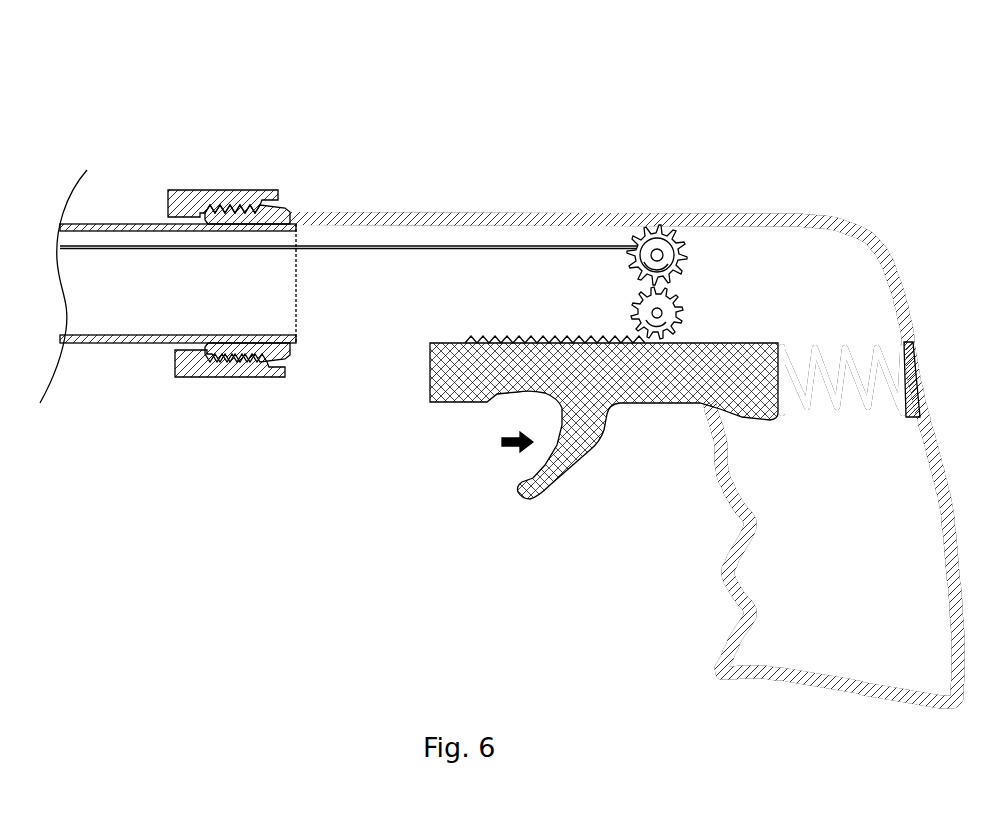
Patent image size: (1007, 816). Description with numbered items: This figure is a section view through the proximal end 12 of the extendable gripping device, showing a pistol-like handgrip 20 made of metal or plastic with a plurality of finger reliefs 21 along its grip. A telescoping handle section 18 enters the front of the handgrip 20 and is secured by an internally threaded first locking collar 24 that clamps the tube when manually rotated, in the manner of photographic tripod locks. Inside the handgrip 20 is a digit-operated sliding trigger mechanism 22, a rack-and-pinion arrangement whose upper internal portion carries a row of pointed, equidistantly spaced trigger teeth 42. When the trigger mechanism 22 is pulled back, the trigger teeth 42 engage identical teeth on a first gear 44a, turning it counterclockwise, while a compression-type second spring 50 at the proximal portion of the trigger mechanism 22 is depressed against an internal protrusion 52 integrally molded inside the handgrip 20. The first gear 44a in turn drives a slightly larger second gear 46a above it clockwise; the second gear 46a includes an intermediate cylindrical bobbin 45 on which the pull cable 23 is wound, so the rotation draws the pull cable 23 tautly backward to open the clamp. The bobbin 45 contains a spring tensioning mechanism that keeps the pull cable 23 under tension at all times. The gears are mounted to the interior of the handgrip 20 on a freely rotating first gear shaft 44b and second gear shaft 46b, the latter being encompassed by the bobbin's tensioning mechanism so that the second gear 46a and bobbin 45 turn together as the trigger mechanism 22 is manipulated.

The proximal end 12 is at (698, 109).
The telescoping handle section 18 is at (153, 223).
The handgrip 20 is at (507, 213).
The finger reliefs 21 is at (730, 660).
The trigger mechanism 22 is at (438, 402).
The pull cable 23 is at (357, 247).
The first locking collar 24 is at (212, 200).
The trigger teeth 42 is at (505, 340).
The first gear 44a is at (670, 313).
The first gear shaft 44b is at (658, 310).
The bobbin 45 is at (665, 248).
The second gear 46a is at (638, 237).
The second gear shaft 46b is at (657, 248).
The second spring 50 is at (848, 347).
The internal protrusion 52 is at (922, 370).